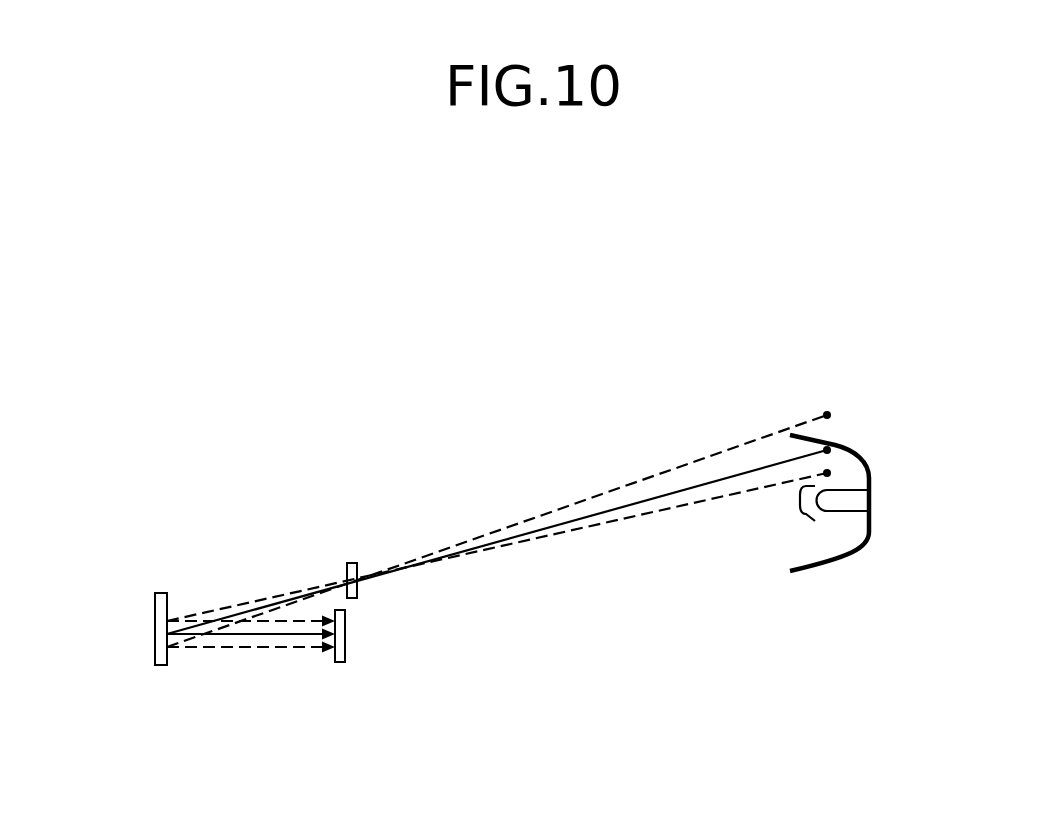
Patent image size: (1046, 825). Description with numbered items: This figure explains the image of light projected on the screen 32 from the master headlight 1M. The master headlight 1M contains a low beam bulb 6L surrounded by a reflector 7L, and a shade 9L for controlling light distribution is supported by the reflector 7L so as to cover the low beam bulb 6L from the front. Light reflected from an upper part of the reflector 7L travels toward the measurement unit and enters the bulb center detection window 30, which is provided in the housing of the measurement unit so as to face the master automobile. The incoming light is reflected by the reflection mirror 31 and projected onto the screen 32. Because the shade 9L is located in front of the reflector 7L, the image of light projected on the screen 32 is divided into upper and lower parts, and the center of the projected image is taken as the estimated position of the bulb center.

The reflection mirror 31 is at (158, 608).
The bulb center detection window 30 is at (351, 560).
The screen 32 is at (340, 665).
The master headlight 1M is at (864, 455).
The low beam bulb 6L is at (843, 505).
The reflector 7L is at (842, 553).
The shade 9L is at (803, 511).